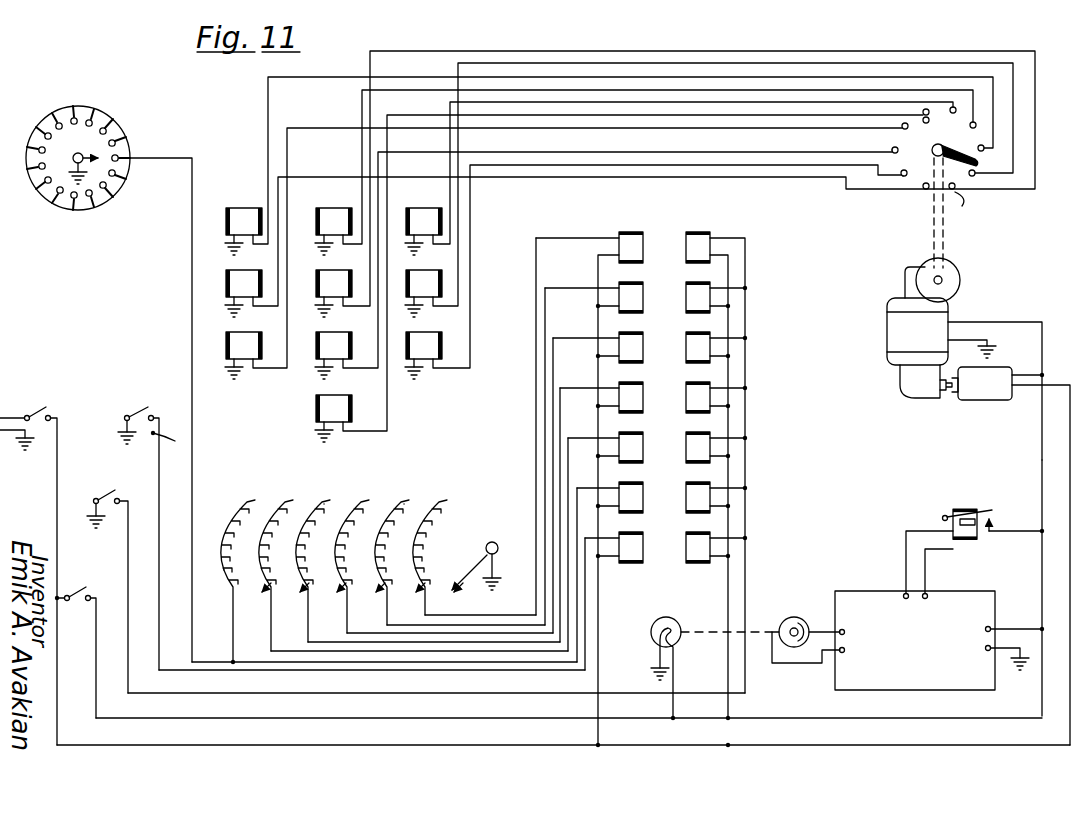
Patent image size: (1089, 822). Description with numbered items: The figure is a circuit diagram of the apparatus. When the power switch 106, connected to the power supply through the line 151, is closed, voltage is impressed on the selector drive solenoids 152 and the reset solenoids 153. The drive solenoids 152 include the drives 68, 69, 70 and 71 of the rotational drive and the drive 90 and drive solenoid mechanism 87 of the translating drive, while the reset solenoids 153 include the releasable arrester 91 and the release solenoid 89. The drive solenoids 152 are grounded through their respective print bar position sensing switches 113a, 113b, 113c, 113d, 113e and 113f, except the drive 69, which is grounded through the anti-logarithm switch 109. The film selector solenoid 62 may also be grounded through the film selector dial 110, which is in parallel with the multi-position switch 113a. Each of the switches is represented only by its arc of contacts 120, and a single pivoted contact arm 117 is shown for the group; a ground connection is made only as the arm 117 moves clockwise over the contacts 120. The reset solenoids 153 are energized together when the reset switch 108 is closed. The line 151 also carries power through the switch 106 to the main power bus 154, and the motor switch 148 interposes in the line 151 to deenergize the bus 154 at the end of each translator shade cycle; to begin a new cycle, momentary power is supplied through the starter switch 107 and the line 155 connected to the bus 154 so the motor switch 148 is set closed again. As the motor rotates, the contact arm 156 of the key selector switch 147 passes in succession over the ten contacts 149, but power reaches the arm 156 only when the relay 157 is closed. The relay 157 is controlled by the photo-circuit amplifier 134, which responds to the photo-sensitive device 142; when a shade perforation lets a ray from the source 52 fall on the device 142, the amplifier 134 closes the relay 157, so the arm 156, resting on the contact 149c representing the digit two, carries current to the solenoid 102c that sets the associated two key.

The film selector dial 110 is at (108, 118).
The power switch 106 is at (40, 408).
The starter switch 107 is at (80, 588).
The reset switch 108 is at (106, 490).
The anti-logarithm switch 109 is at (142, 406).
The solenoid 102c is at (320, 360).
The multi-position switch 113a is at (239, 496).
The print bar position sensing switch 113b is at (280, 496).
The print bar position sensing switch 113c is at (320, 496).
The print bar position sensing switch 113d is at (362, 496).
The print bar position sensing switch 113e is at (405, 496).
The print bar position sensing switch 113f is at (448, 496).
The arc of contacts 120 is at (222, 572).
The pivoted contact arm 117 is at (468, 580).
The selector drive solenoids 152 is at (628, 228).
The reset solenoids 153 is at (700, 228).
The drive 90 is at (640, 250).
The releasable arrester 91 is at (690, 250).
The drive solenoid mechanism 87 is at (640, 300).
The release solenoid 89 is at (690, 303).
The drive 71 is at (688, 345).
The drive 70 is at (688, 395).
The drive mechanism 68 is at (688, 445).
The film selector solenoid 62 is at (688, 495).
The drive 69 is at (688, 545).
The light source 52 is at (680, 626).
The photo-sensitive device 142 is at (790, 617).
The photo-circuit amplifier 134 is at (858, 594).
The relay 157 is at (968, 512).
The motor switch 148 is at (985, 400).
The main power bus 154 is at (1042, 462).
The line 155 is at (378, 718).
The line 151 is at (498, 745).
The contact 149c is at (890, 148).
The contacts 149 is at (903, 178).
The key selector switch 147 is at (918, 208).
The contact arm 156 is at (975, 207).